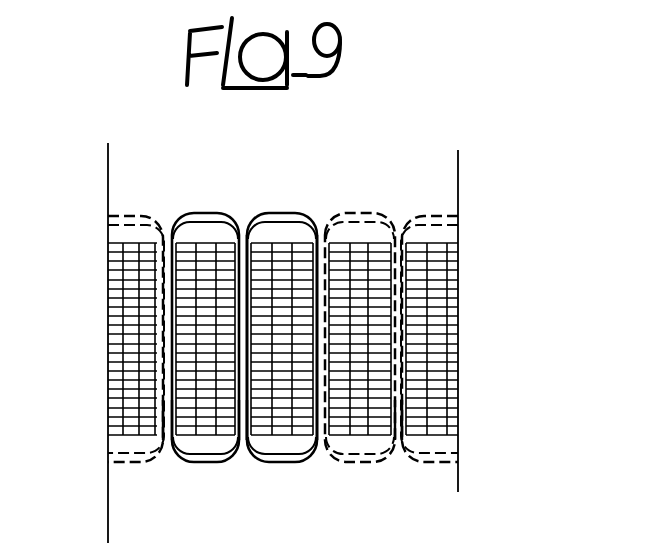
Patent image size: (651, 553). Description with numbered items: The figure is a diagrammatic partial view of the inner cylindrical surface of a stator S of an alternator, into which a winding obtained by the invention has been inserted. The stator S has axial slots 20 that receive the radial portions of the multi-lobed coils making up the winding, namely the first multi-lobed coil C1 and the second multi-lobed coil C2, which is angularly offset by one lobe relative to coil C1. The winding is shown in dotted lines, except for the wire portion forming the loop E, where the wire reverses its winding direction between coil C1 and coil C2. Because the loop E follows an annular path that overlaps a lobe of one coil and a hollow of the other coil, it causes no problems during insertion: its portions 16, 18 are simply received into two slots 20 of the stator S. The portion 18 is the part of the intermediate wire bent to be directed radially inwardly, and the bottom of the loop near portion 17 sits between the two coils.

The portion of loop 16 is at (317, 377).
The bottom wall 17 is at (277, 457).
The portion directed radially inwardly 18 is at (247, 281).
The axial slots 20 is at (173, 403).
The loop E is at (290, 206).
The first multi-lobed coil C1 is at (366, 201).
The second multi-lobed coil C2 is at (345, 466).
The stator S is at (437, 337).